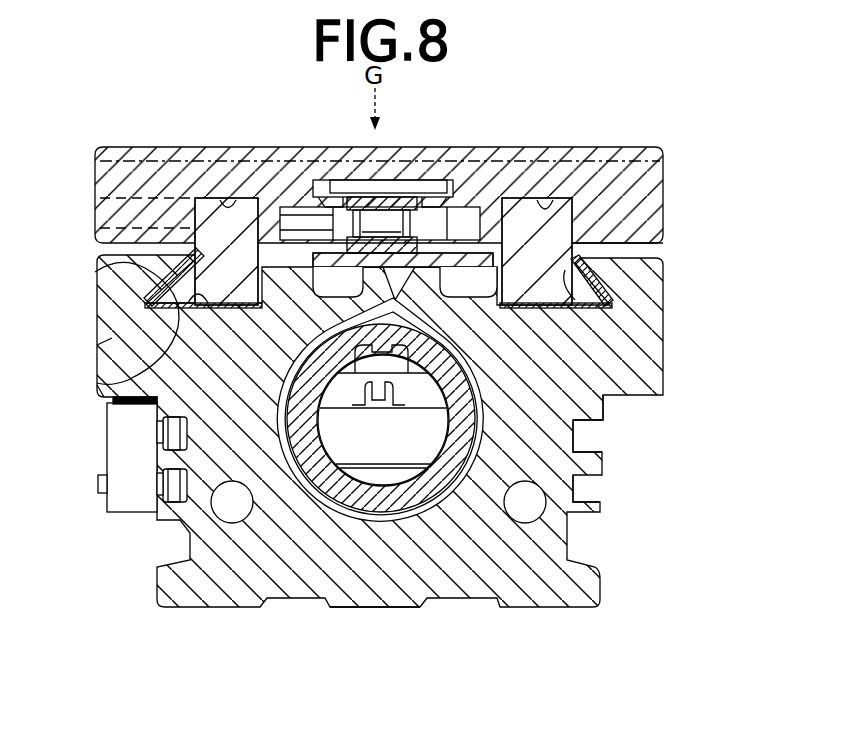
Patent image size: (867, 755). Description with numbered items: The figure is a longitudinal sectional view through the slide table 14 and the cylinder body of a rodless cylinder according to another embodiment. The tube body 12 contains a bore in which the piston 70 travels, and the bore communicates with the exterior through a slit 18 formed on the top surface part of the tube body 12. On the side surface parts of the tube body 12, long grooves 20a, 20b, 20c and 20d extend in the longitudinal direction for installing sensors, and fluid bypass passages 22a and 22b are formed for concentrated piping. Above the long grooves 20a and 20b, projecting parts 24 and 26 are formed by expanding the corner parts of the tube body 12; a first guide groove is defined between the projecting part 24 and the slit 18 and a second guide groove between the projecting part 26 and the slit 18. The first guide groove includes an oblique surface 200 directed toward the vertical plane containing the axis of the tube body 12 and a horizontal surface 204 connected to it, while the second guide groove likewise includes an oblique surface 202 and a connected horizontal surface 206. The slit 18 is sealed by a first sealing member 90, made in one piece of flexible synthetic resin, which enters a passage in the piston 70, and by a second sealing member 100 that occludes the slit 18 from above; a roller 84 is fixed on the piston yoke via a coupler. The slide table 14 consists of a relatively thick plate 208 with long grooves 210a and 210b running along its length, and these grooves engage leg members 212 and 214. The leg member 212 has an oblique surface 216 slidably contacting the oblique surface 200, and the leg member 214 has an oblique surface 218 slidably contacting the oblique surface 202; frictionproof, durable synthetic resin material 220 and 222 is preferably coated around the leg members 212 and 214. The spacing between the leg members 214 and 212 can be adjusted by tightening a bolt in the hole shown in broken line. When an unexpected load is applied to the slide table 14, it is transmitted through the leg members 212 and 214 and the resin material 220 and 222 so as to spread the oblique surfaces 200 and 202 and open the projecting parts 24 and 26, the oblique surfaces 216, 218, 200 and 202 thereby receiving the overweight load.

The tube body 12 is at (380, 606).
The slide table 14 is at (368, 155).
The slit 18 is at (398, 300).
The long groove 20a is at (587, 440).
The long groove 20b is at (583, 493).
The long groove 20c is at (153, 407).
The long groove 20d is at (150, 520).
The fluid bypass passage 22a is at (523, 515).
The fluid bypass passage 22b is at (233, 515).
The projecting part 24 is at (667, 373).
The projecting part 26 is at (110, 340).
The piston 70 is at (333, 518).
The roller 84 is at (397, 187).
The first sealing member 90 is at (375, 410).
The second sealing member 100 is at (330, 193).
The oblique surface 200 is at (640, 300).
The oblique surface 202 is at (110, 270).
The horizontal surface 204 is at (620, 400).
The horizontal surface 206 is at (100, 387).
The plate 208 is at (667, 193).
The long groove 210a is at (553, 197).
The long groove 210b is at (228, 203).
The leg member 212 is at (660, 226).
The leg member 214 is at (210, 235).
The oblique surface 216 is at (635, 285).
The oblique surface 218 is at (195, 250).
The synthetic resin material 220 is at (610, 320).
The synthetic resin material 222 is at (115, 322).